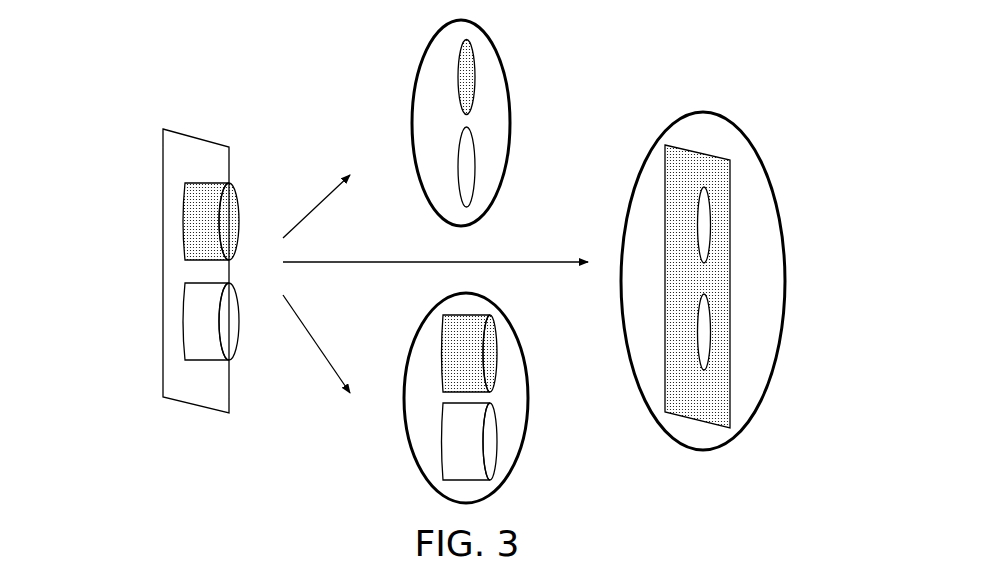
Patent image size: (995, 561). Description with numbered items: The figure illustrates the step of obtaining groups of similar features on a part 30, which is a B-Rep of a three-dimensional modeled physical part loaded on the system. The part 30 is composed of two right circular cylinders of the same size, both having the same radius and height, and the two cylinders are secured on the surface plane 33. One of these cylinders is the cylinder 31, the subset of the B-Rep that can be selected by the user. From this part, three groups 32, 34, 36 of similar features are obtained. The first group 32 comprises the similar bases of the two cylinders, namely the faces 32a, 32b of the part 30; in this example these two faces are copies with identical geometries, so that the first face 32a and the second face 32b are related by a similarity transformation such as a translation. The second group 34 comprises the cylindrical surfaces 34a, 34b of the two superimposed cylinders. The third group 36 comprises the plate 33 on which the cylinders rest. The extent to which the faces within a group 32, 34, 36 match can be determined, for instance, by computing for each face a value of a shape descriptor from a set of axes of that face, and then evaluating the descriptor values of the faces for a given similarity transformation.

The part 30 is at (270, 304).
The cylinder 31 is at (175, 205).
The first group 32 is at (510, 123).
The first face 32a is at (468, 98).
The second face 32b is at (473, 168).
The surface plane 33 is at (687, 403).
The second group 34 is at (528, 398).
The cylindrical surface 34a is at (203, 212).
The cylindrical surface 34b is at (192, 327).
The third group 36 is at (785, 280).